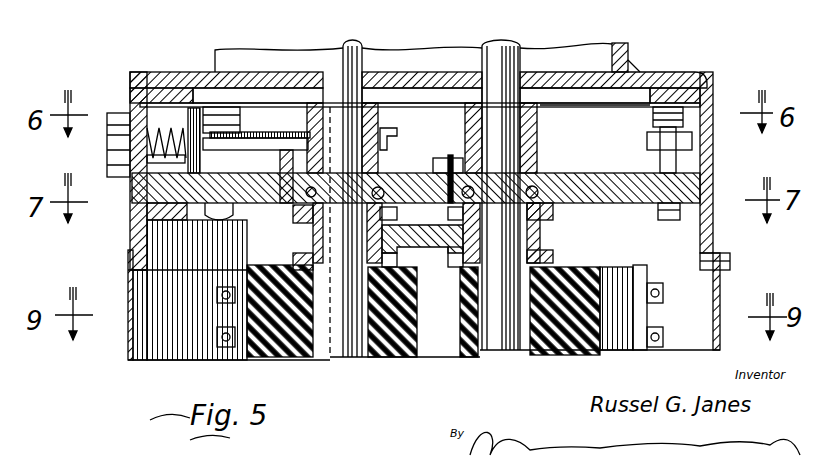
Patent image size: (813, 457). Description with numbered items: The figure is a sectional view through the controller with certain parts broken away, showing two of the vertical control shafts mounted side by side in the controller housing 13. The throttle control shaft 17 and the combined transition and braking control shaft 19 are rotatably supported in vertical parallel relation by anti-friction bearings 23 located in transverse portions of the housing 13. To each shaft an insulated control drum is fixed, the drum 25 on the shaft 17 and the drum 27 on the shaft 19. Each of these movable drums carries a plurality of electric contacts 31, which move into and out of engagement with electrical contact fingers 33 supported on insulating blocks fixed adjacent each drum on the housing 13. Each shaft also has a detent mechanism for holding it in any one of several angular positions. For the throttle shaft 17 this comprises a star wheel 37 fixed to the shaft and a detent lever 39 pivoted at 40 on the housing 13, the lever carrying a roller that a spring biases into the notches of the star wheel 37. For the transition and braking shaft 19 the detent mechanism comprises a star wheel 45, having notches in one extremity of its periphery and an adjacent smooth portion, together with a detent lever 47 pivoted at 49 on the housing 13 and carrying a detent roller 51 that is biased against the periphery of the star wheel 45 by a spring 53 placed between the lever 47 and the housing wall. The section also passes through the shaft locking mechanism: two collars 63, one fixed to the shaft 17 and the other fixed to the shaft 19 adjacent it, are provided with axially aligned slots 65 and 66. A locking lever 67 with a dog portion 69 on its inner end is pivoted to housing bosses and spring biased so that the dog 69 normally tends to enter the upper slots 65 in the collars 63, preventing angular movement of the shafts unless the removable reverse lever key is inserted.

The controller housing 13 is at (714, 223).
The throttle control shaft 17 is at (520, 46).
The combined transition and braking control shaft 19 is at (365, 47).
The anti-friction bearings 23 is at (448, 157).
The insulated control drum 25 is at (575, 265).
The insulated control drum 27 is at (280, 267).
The electric contacts 31 is at (640, 270).
The electrical contact fingers 33 is at (660, 330).
The star wheel 37 is at (605, 132).
The detent lever 39 is at (688, 143).
The pivot 40 is at (680, 190).
The star wheel 45 is at (282, 147).
The detent lever 47 is at (184, 113).
The pivot 49 is at (217, 107).
The detent roller 51 is at (178, 160).
The spring 53 is at (182, 135).
The collars 63 is at (320, 258).
The upper slot 65 is at (412, 280).
The slot 66 is at (466, 262).
The locking lever 67 is at (425, 248).
The dog portion 69 is at (367, 237).